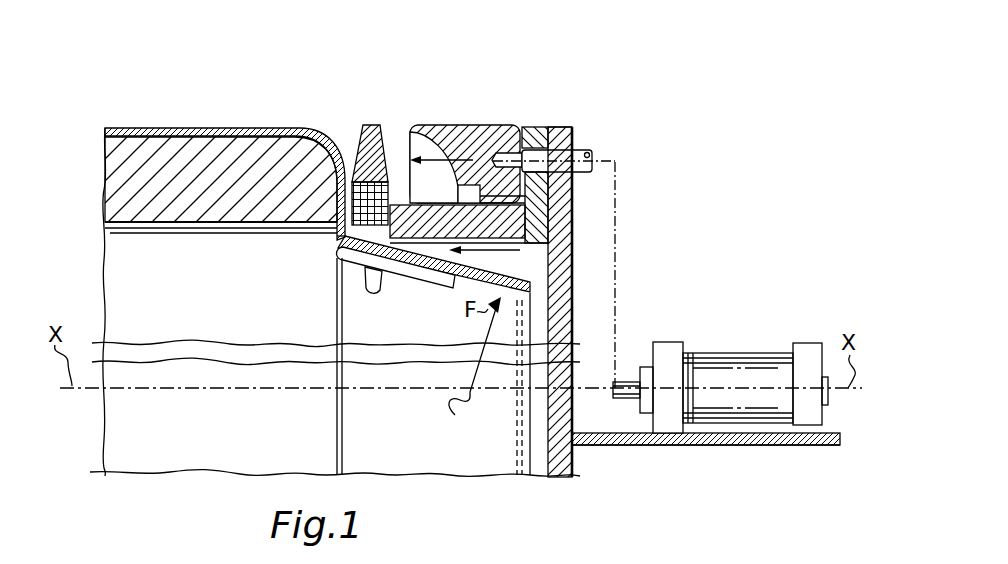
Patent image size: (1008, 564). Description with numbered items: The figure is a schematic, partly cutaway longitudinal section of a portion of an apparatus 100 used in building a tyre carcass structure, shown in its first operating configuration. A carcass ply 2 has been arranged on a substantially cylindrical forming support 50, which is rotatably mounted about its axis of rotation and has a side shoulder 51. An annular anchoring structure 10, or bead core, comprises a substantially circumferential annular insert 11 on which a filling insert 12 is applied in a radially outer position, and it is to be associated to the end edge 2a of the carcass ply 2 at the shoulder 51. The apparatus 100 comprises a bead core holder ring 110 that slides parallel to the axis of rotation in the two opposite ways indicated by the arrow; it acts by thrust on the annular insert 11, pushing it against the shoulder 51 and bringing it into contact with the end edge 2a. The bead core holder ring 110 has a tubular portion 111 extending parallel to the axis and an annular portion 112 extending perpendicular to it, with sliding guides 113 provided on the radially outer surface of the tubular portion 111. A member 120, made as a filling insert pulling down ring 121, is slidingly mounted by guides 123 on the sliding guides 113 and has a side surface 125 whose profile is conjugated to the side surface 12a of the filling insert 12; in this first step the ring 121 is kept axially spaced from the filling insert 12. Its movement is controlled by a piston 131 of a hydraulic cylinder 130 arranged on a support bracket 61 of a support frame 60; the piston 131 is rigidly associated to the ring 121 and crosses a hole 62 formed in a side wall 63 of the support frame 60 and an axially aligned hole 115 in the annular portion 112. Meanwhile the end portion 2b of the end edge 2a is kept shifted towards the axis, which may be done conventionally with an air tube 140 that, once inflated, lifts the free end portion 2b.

The carcass ply 2 is at (218, 137).
The end edge 2a is at (328, 240).
The end portion 2b is at (448, 272).
The annular anchoring structure 10 is at (356, 116).
The substantially circumferential annular insert 11 is at (355, 243).
The filling insert 12 is at (348, 136).
The side surface 12a is at (382, 130).
The forming support 50 is at (126, 162).
The side shoulder 51 is at (333, 200).
The support frame 60 is at (594, 450).
The support bracket 61 is at (760, 446).
The hole 62 is at (571, 127).
The side wall 63 is at (573, 312).
The apparatus 100 is at (709, 130).
The bead core holder ring 110 is at (573, 278).
The tubular portion 111 is at (432, 224).
The annular portion 112 is at (543, 128).
The sliding guides 113 is at (532, 222).
The hole 115 is at (540, 134).
The member 120 is at (446, 102).
The filling insert pulling down ring 121 is at (480, 128).
The guides 123 is at (519, 190).
The side surface 125 is at (413, 144).
The hydraulic cylinder 130 is at (717, 370).
The piston 131 is at (590, 149).
The air tube 140 is at (462, 367).